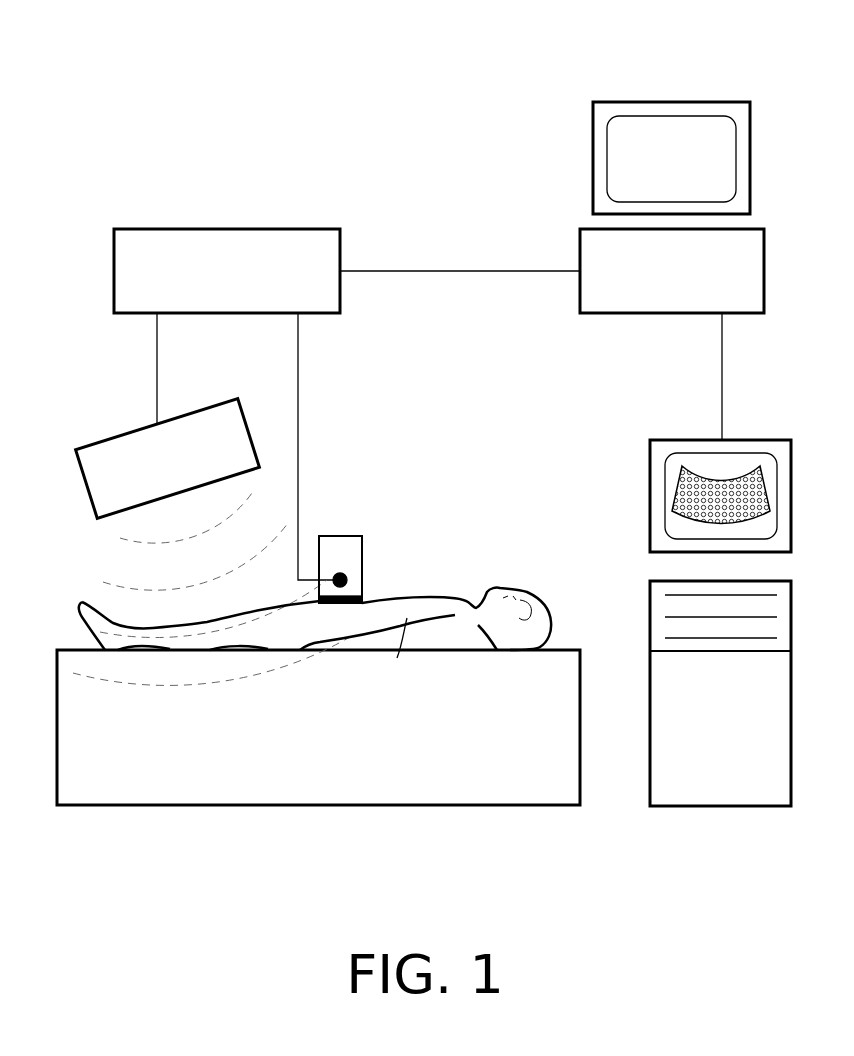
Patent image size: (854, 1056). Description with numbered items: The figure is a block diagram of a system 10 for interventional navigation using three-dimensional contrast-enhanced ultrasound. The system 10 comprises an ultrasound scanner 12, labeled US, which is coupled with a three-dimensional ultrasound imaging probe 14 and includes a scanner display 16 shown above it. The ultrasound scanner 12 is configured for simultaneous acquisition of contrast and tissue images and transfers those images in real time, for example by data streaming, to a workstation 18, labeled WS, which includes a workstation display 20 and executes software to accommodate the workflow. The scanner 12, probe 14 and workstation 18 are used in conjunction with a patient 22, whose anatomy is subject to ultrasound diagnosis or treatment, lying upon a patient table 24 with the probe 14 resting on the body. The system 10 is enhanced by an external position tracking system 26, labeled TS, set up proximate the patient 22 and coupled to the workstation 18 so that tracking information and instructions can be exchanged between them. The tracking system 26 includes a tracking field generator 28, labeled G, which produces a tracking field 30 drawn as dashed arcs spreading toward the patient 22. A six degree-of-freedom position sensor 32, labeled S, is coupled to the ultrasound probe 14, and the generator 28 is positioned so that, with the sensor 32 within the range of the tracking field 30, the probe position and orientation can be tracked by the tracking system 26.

The system 10 is at (106, 80).
The ultrasound scanner 12 is at (737, 806).
The ultrasound imaging probe 14 is at (362, 558).
The scanner display 16 is at (763, 440).
The workstation 18 is at (605, 313).
The workstation display 20 is at (633, 102).
The patient 22 is at (84, 618).
The patient table 24 is at (325, 805).
The external position tracking system 26 is at (215, 229).
The tracking field generator 28 is at (100, 442).
The tracking field 30 is at (222, 567).
The sensor 32 is at (340, 572).